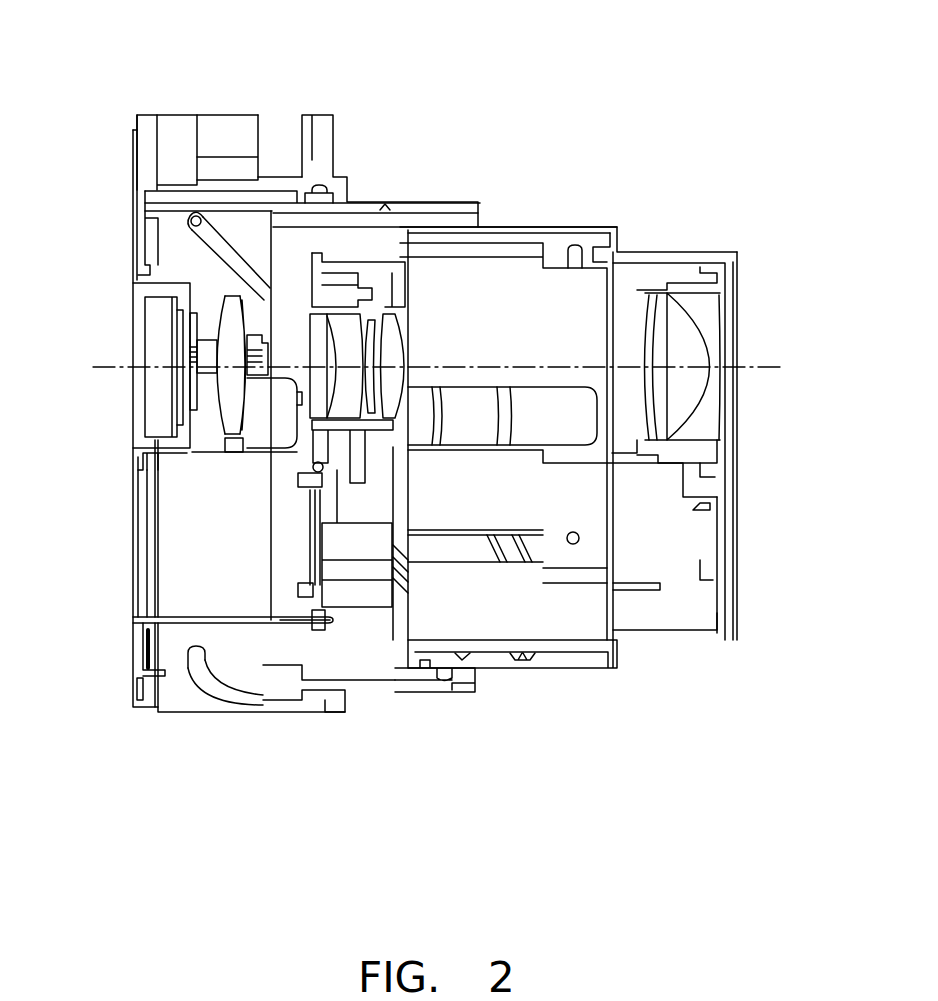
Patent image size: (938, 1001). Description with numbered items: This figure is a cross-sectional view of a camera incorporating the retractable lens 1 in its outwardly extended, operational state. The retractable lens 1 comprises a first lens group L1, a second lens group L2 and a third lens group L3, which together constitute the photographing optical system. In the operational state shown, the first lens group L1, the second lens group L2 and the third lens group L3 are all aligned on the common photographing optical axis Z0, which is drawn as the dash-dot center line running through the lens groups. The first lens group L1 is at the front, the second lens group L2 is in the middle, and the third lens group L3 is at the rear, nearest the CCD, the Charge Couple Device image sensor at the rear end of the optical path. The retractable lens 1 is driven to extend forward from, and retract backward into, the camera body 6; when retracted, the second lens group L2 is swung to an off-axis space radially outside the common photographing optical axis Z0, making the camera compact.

The retractable lens 1 is at (673, 548).
The camera body 6 is at (283, 172).
The first lens group L1 is at (700, 307).
The second lens group L2 is at (352, 345).
The third lens group L3 is at (230, 363).
The element CCD is at (160, 397).
The common photographing optical axis Z0 is at (484, 370).